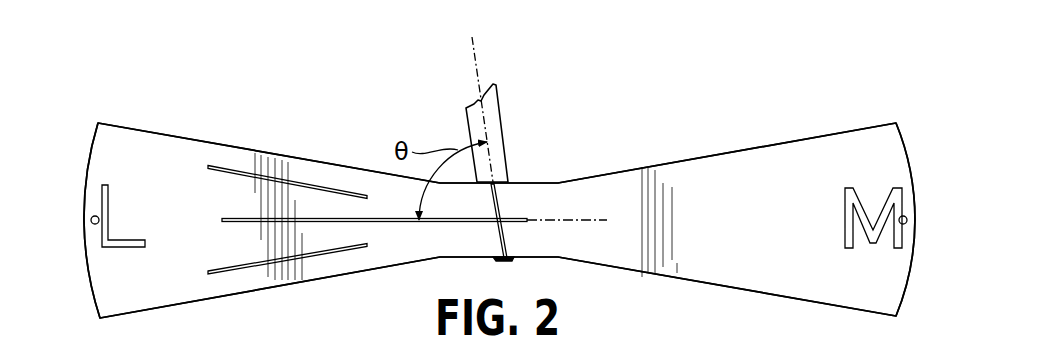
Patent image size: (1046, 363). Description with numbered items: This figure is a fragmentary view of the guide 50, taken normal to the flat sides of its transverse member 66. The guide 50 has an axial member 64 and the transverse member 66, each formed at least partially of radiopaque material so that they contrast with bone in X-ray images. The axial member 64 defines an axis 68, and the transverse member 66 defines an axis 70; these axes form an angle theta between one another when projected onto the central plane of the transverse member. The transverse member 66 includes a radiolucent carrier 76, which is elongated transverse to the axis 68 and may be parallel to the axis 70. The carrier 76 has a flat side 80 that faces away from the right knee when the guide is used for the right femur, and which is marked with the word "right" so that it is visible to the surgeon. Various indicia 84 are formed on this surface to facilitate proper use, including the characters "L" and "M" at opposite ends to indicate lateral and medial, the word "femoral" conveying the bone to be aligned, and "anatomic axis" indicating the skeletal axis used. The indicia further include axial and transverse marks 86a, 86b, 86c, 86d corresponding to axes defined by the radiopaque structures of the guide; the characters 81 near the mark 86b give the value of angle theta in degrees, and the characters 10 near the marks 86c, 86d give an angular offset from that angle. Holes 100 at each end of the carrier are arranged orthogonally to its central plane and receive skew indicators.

The guide 50 is at (641, 84).
The side 80 is at (147, 287).
The indicia 84 is at (159, 157).
The transverse member 66 is at (275, 146).
The carrier 76 is at (725, 152).
The holes 100 is at (91, 220).
The angular offset value indicia 10 is at (188, 222).
The angle value indicia 81 is at (200, 217).
The transverse mark 86c is at (233, 172).
The transverse mark 86d is at (238, 268).
The transverse mark 86b is at (392, 222).
The axial mark 86a is at (506, 238).
The axis 70 is at (568, 219).
The axis 68 is at (474, 67).
The axial member 64 is at (503, 123).